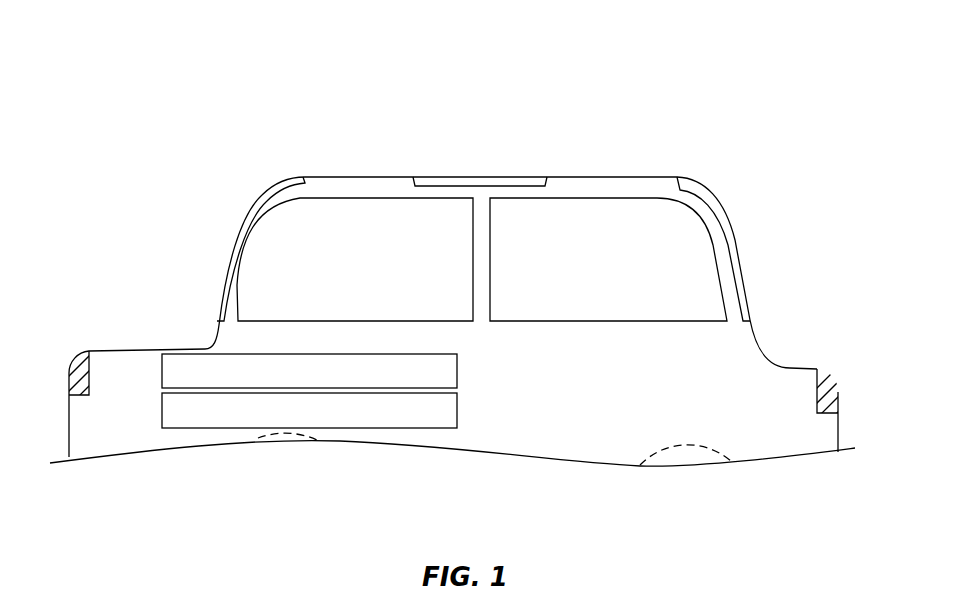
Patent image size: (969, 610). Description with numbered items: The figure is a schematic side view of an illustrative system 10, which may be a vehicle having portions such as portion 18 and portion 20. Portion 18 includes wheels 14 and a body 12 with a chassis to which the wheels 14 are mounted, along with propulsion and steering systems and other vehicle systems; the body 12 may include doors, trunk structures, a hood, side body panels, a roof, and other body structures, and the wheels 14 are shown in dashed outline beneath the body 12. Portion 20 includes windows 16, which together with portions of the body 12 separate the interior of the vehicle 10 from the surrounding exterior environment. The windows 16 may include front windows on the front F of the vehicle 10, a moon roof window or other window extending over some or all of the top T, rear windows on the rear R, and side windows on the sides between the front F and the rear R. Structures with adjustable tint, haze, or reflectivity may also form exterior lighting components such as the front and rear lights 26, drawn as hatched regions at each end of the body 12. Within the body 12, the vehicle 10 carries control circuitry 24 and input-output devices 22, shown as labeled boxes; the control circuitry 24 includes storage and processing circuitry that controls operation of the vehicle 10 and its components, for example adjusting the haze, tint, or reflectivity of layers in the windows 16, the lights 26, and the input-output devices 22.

The system 10 is at (693, 89).
The body 12 is at (228, 342).
The wheels 14 is at (287, 441).
The windows 16 is at (249, 217).
The portion 18 is at (872, 420).
The portion 20 is at (840, 276).
The input-output devices 22 is at (162, 405).
The control circuitry 24 is at (162, 370).
The front and rear lights 26 is at (72, 366).
The front F is at (259, 185).
The top T is at (460, 163).
The rear R is at (764, 302).